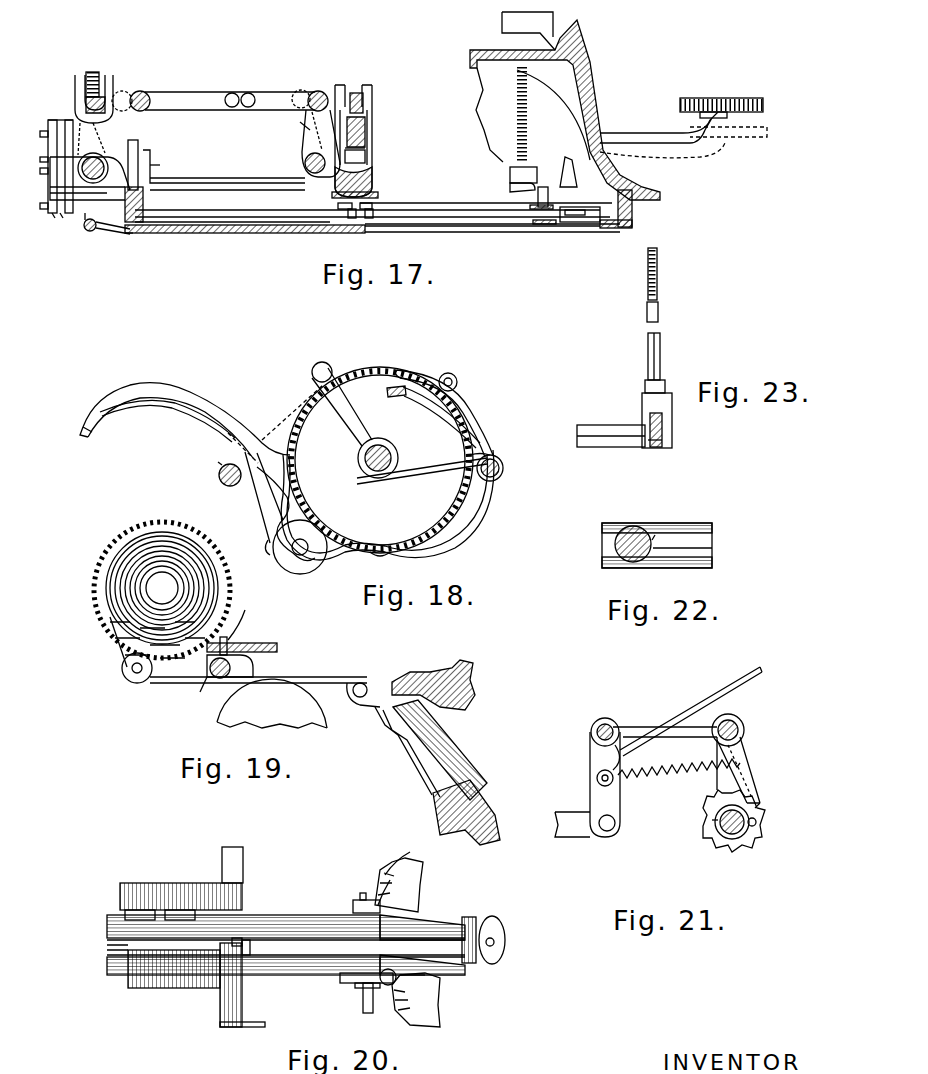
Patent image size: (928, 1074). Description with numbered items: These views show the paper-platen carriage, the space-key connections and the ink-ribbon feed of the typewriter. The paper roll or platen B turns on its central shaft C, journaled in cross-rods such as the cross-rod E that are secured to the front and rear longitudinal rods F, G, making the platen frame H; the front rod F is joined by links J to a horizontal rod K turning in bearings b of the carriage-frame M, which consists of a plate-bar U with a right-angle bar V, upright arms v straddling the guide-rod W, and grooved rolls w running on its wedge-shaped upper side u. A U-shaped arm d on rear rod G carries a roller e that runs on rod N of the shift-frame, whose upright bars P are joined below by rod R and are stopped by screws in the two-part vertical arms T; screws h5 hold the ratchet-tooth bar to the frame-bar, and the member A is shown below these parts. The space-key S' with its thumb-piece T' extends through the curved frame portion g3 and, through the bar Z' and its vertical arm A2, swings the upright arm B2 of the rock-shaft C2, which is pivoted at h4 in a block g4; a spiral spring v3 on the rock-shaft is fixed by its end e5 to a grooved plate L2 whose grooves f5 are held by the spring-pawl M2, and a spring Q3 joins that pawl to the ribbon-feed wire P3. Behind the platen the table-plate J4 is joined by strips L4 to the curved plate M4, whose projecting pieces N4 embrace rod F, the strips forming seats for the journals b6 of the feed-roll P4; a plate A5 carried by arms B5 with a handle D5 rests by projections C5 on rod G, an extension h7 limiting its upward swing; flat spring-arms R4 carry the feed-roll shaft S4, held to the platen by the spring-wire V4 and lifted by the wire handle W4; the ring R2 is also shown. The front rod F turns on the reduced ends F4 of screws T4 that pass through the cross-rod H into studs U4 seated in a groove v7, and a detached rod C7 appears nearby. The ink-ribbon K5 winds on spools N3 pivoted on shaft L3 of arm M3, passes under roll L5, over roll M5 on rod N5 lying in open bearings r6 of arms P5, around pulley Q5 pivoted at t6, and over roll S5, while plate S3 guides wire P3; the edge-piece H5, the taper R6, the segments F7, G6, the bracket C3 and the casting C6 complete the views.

In FIG. 17, the base plate A is at (378, 223).
In FIG. 17, the cross-rod E is at (202, 96).
In FIG. 17, the rear longitudinal rod G is at (145, 87).
In FIG. 17, the U-shaped arm d is at (124, 87).
In FIG. 17, the front longitudinal rod F is at (319, 87).
In FIG. 18, the front longitudinal rod F is at (504, 468).
In FIG. 17, the link J is at (306, 143).
In FIG. 17, the horizontal rod K is at (304, 165).
In FIG. 17, the horizontal rod N is at (82, 110).
In FIG. 17, the roller e is at (97, 73).
In FIG. 17, the vertical arm T is at (49, 166).
In FIG. 17, the upright bar P is at (101, 153).
In FIG. 17, the connecting rod R is at (90, 232).
In FIG. 17, the grooved roll w is at (368, 130).
In FIG. 17, the wedge-shaped upper side u is at (379, 128).
In FIG. 17, the guide-rod W is at (376, 148).
In FIG. 17, the carriage-frame M is at (372, 180).
In FIG. 17, the plate-bar U is at (380, 195).
In FIG. 17, the curved vertical frame portion g3 is at (577, 26).
In FIG. 17, the space-key lever S' is at (683, 131).
In FIG. 17, the thumb-piece T' is at (721, 95).
In FIG. 17, the upright arm v is at (342, 138).
In FIG. 17, the screw h5 is at (351, 220).
In FIG. 17, the right-angle bar V is at (204, 186).
In FIG. 17, the bearing b is at (372, 203).
In FIG. 18, the toothed ring R2 is at (367, 366).
In FIG. 18, the platen shaft C is at (399, 453).
In FIG. 18, the plate A5 is at (282, 418).
In FIG. 18, the paper roll or platen B is at (430, 500).
In FIG. 19, the paper roll or platen B is at (215, 710).
In FIG. 18, the arm B5 is at (210, 410).
In FIG. 18, the handle D5 is at (82, 428).
In FIG. 18, the table-plate J4 is at (166, 420).
In FIG. 18, the projection C5 is at (222, 465).
In FIG. 18, the arm extension h7 is at (253, 497).
In FIG. 18, the connecting strip L4 is at (275, 512).
In FIG. 18, the feed-roll P4 is at (310, 533).
In FIG. 18, the end journal b6 is at (300, 556).
In FIG. 19, the end journal b6 is at (207, 664).
In FIG. 18, the flat spring-arm R4 is at (418, 378).
In FIG. 18, the feed-roll shaft S4 is at (458, 383).
In FIG. 18, the wire handle arm W4 is at (396, 397).
In FIG. 18, the projecting piece N4 is at (500, 458).
In FIG. 18, the spring-wire V4 is at (414, 472).
In FIG. 18, the curved plate M4 is at (395, 553).
In FIG. 23, the curved plate M4 is at (656, 448).
In FIG. 19, the ink-ribbon K5 is at (123, 558).
In FIG. 20, the ink-ribbon K5 is at (306, 918).
In FIG. 19, the spool shaft L3 is at (175, 588).
In FIG. 20, the spool shaft L3 is at (107, 948).
In FIG. 19, the ink-ribbon spool N3 is at (95, 608).
In FIG. 20, the ink-ribbon spool N3 is at (120, 905).
In FIG. 19, the roll L5 is at (122, 676).
In FIG. 19, the bracket C3 is at (206, 684).
In FIG. 20, the bracket C3 is at (220, 1000).
In FIG. 19, the ribbon-feed wire P3 is at (268, 642).
In FIG. 21, the ribbon-feed wire P3 is at (690, 710).
In FIG. 19, the guide plate S3 is at (230, 640).
In FIG. 20, the guide plate S3 is at (240, 938).
In FIG. 19, the spool arm M3 is at (232, 622).
In FIG. 20, the spool arm M3 is at (243, 862).
In FIG. 19, the roll M5 is at (362, 678).
In FIG. 20, the roll M5 is at (355, 905).
In FIG. 19, the roll rod N5 is at (352, 700).
In FIG. 20, the roll rod N5 is at (387, 985).
In FIG. 19, the casting C6 is at (410, 662).
In FIG. 20, the casting C6 is at (397, 857).
In FIG. 20, the edge-piece H5 is at (248, 1028).
In FIG. 20, the reduced screw end F4 is at (250, 958).
In FIG. 20, the taper R6 is at (437, 937).
In FIG. 20, the pulley Q5 is at (492, 916).
In FIG. 20, the pulley pivot t6 is at (496, 940).
In FIG. 20, the frame arm P5 is at (378, 892).
In FIG. 20, the gear segment F7 is at (423, 888).
In FIG. 20, the gear G6 is at (440, 1003).
In FIG. 20, the roll S5 is at (350, 982).
In FIG. 20, the open bearing r6 is at (360, 990).
In FIG. 21, the upright arm B2 is at (712, 748).
In FIG. 21, the vertical arm A2 is at (597, 778).
In FIG. 21, the rocking bar Z' is at (602, 824).
In FIG. 21, the spiral spring Q3 is at (679, 780).
In FIG. 21, the spring-pawl M2 is at (755, 777).
In FIG. 21, the rock-shaft C2 is at (719, 820).
In FIG. 23, the rock-shaft C2 is at (604, 448).
In FIG. 21, the transverse groove f5 is at (710, 796).
In FIG. 21, the spiral spring v3 is at (714, 830).
In FIG. 21, the grooved plate L2 is at (762, 810).
In FIG. 21, the spring end e5 is at (758, 823).
In FIG. 22, the platen frame H is at (657, 552).
In FIG. 22, the pivot screw T4 is at (615, 548).
In FIG. 22, the stud U4 is at (643, 528).
In FIG. 22, the groove v7 is at (680, 530).
In FIG. 23, the rod C7 is at (661, 350).
In FIG. 23, the block g4 is at (642, 400).
In FIG. 23, the pivot h4 is at (672, 435).